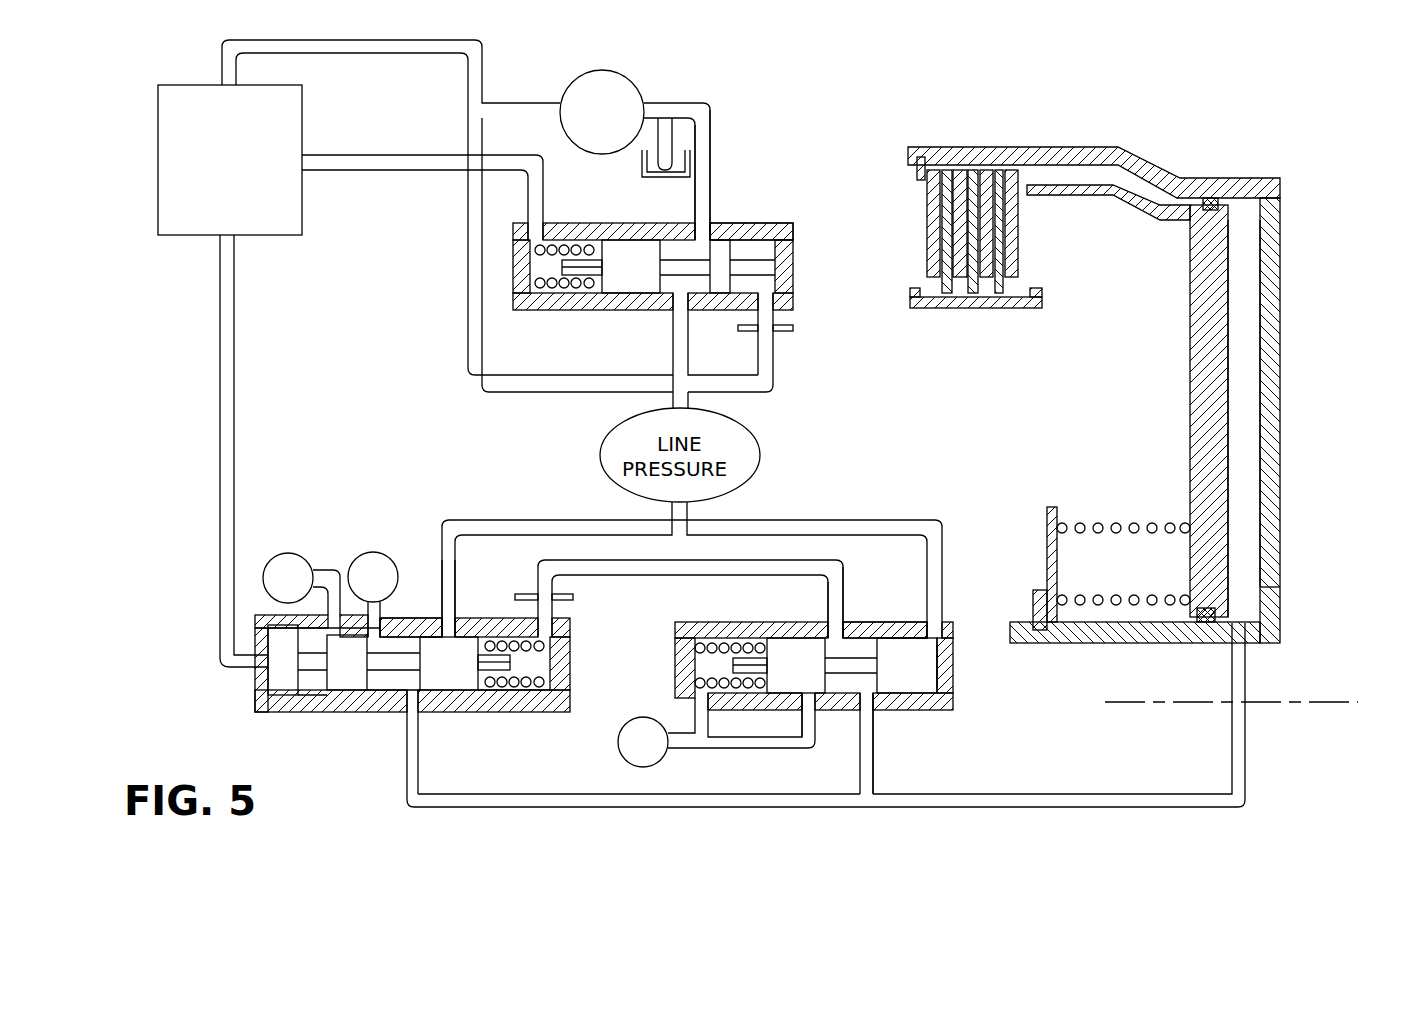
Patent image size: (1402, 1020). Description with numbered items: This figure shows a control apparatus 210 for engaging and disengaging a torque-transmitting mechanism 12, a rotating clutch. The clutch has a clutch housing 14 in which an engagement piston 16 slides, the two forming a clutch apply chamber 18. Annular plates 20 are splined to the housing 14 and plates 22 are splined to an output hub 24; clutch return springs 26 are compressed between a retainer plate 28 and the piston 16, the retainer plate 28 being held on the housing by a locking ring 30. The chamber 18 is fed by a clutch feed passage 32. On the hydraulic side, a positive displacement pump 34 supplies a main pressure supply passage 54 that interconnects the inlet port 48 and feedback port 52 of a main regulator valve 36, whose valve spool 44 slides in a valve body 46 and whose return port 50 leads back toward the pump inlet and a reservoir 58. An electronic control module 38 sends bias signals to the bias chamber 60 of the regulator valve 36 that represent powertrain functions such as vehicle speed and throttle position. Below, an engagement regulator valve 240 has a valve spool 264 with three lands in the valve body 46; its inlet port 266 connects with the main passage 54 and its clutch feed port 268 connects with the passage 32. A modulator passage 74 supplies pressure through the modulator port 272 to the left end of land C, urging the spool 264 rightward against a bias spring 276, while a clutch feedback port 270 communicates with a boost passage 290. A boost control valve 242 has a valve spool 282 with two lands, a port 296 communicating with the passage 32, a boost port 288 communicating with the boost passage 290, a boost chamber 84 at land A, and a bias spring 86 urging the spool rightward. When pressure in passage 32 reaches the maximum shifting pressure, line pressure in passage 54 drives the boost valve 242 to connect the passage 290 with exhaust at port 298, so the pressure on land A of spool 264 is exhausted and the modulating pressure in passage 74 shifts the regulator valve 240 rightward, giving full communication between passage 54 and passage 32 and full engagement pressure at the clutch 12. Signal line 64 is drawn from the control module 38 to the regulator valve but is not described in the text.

The torque-transmitting mechanism 12 is at (1115, 396).
The clutch housing 14 is at (1272, 195).
The engagement piston 16 is at (1205, 303).
The clutch apply chamber 18 is at (1243, 375).
The annular plates 20 is at (1012, 180).
The plates 22 is at (998, 296).
The output hub 24 is at (910, 297).
The clutch return springs 26 is at (1105, 523).
The retainer plate 28 is at (1047, 525).
The locking ring 30 is at (1033, 612).
The clutch feed passage 32 is at (470, 808).
The positive displacement pump 34 is at (576, 74).
The main regulator valve 36 is at (653, 258).
The electronic control module 38 is at (193, 78).
The valve spool 44 is at (570, 262).
The valve body 46 is at (766, 228).
The inlet port 48 is at (673, 338).
The return port 50 is at (700, 238).
The feedback port 52 is at (783, 305).
The main pressure supply passage 54 is at (468, 266).
The reservoir 58 is at (678, 166).
The bias chamber 60 is at (552, 287).
The control signal line 64 is at (366, 155).
The modulator passage 74 is at (220, 395).
The boost chamber 84 is at (938, 668).
The bias spring 86 is at (720, 645).
The control apparatus 210 is at (676, 227).
The engagement regulator valve 240 is at (445, 632).
The boost control valve 242 is at (813, 639).
The valve spool 264 is at (388, 692).
The inlet port 266 is at (449, 628).
The clutch feed port 268 is at (412, 702).
The clutch feedback port 270 is at (543, 612).
The modulator port 272 is at (255, 655).
The bias spring 276 is at (527, 684).
The valve spool 282 is at (850, 670).
The boost port 288 is at (840, 600).
The boost passage 290 is at (770, 560).
The port 296 is at (868, 705).
The port 298 is at (805, 722).